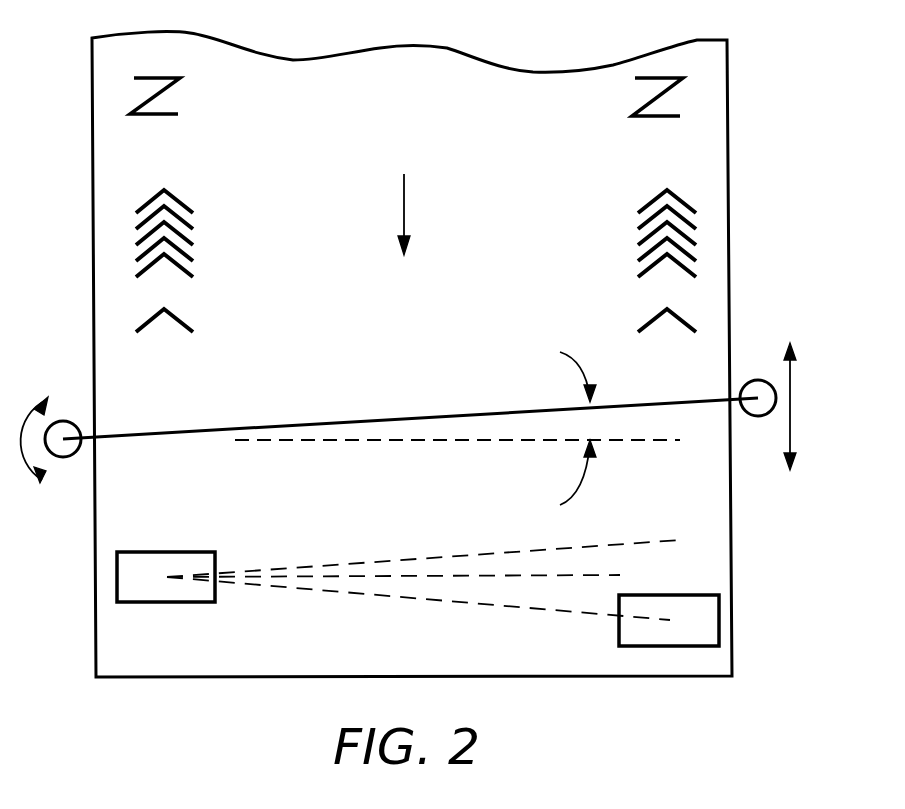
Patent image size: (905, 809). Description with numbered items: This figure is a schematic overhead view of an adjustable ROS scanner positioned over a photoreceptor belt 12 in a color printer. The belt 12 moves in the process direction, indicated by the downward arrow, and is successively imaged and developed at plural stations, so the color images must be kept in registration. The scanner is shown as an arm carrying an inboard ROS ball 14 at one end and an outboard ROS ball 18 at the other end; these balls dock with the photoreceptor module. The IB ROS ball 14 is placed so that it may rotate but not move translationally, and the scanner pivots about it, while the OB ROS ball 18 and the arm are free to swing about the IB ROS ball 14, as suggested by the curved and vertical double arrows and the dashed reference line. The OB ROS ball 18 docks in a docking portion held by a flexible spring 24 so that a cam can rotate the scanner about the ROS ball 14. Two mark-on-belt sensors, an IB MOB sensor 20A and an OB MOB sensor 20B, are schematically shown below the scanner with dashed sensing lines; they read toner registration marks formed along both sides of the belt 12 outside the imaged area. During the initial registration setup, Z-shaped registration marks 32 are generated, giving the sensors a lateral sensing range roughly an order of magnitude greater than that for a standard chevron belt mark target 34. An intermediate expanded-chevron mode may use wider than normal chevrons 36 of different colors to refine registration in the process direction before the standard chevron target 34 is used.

The photoreceptor belt 12 is at (708, 289).
The IB ROS ball 14 is at (68, 456).
The OB ROS ball 18 is at (758, 417).
The MOB sensor 20A is at (117, 590).
The MOB sensor 20B is at (720, 622).
The flexible spring 24 is at (688, 323).
The registration mark 32 is at (148, 101).
The chevron belt mark target 34 is at (148, 325).
The wider than normal chevrons 36 is at (137, 229).